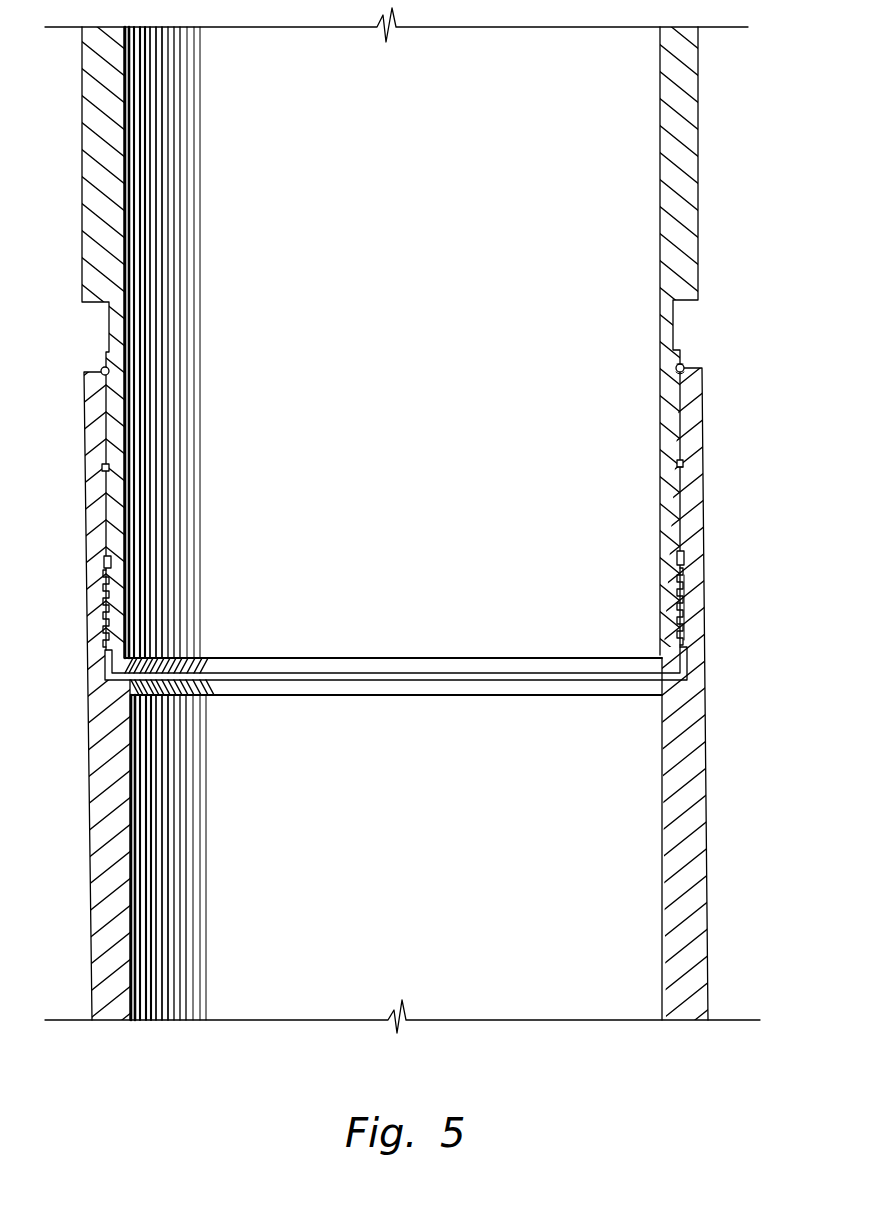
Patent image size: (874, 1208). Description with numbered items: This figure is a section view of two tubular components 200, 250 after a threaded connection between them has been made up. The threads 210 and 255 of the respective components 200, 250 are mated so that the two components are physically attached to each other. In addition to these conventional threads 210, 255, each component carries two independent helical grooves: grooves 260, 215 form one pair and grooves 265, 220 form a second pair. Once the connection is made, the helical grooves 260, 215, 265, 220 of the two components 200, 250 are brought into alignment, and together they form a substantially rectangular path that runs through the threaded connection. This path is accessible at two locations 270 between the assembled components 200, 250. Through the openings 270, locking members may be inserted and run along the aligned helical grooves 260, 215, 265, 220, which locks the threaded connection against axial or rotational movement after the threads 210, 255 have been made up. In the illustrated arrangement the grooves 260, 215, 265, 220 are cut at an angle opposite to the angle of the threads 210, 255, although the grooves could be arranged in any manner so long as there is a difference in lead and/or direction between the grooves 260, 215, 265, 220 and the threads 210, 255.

The component 200 is at (699, 148).
The component 250 is at (706, 830).
The opening 270 is at (103, 367).
The helical groove 215 is at (674, 375).
The helical groove 260 is at (684, 375).
The helical groove 220 is at (675, 467).
The helical groove 265 is at (686, 467).
The threads 255 is at (677, 606).
The threads 210 is at (688, 590).